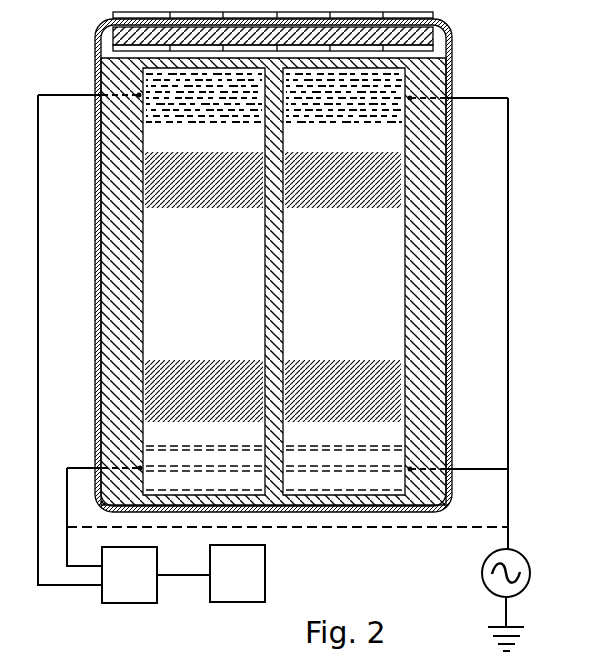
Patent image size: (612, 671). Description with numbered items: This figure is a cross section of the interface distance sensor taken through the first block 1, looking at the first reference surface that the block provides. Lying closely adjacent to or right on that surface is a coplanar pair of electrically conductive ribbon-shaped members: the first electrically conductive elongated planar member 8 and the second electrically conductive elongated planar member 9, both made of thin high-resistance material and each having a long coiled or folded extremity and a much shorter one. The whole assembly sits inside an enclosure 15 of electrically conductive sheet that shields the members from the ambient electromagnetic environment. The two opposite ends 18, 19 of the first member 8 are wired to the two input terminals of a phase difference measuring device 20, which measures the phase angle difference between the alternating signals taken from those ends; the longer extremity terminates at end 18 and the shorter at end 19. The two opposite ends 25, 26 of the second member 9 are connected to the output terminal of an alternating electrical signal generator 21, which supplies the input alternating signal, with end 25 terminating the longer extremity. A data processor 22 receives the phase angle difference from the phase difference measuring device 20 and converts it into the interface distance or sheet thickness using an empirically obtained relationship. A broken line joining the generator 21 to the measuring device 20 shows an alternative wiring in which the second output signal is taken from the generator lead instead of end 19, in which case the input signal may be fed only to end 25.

The first block 1 is at (425, 347).
The first electrically conductive elongated planar member 8 is at (183, 260).
The second electrically conductive elongated planar member 9 is at (365, 276).
The enclosure 15 is at (97, 305).
The first end of the first elongated planar member 18 is at (138, 96).
The second end of the first elongated planar member 19 is at (120, 465).
The phase difference measuring device 20 is at (122, 604).
The alternating electrical signal generator 21 is at (480, 572).
The data processor 22 is at (232, 604).
The first end of the second elongated planar member 25 is at (412, 98).
The second end of the second elongated planar member 26 is at (410, 468).